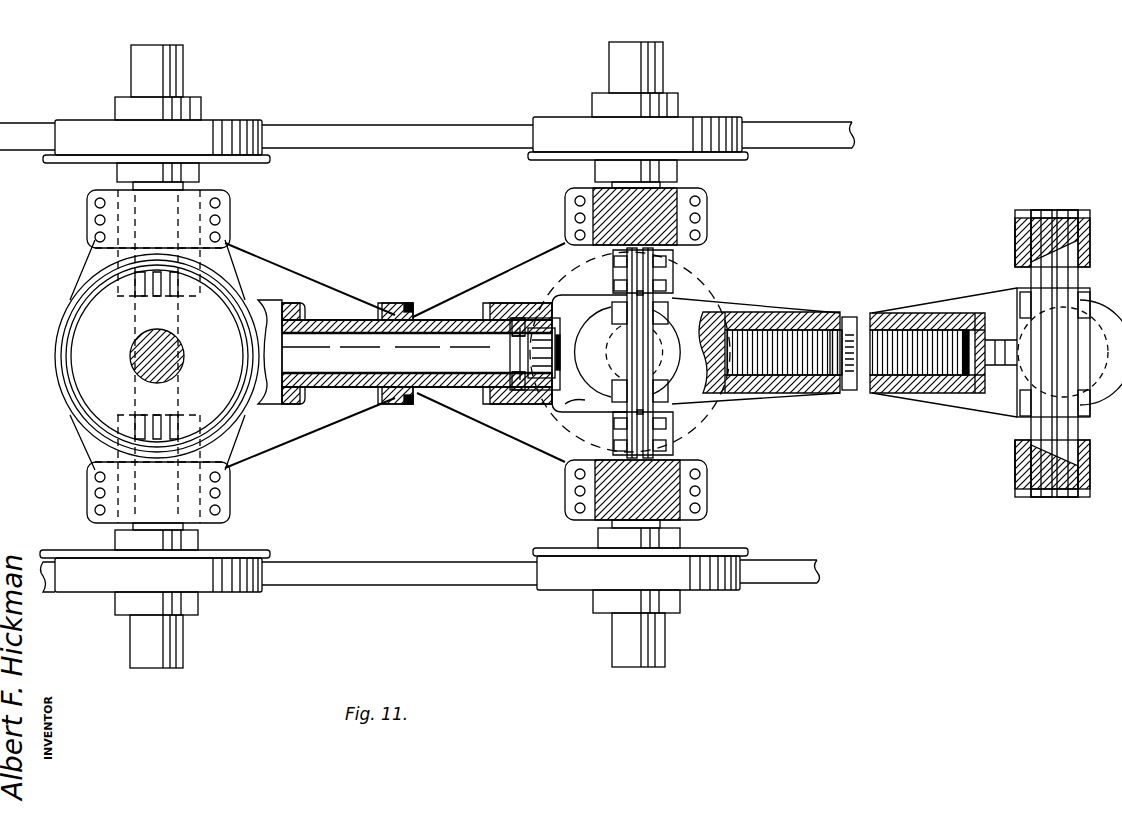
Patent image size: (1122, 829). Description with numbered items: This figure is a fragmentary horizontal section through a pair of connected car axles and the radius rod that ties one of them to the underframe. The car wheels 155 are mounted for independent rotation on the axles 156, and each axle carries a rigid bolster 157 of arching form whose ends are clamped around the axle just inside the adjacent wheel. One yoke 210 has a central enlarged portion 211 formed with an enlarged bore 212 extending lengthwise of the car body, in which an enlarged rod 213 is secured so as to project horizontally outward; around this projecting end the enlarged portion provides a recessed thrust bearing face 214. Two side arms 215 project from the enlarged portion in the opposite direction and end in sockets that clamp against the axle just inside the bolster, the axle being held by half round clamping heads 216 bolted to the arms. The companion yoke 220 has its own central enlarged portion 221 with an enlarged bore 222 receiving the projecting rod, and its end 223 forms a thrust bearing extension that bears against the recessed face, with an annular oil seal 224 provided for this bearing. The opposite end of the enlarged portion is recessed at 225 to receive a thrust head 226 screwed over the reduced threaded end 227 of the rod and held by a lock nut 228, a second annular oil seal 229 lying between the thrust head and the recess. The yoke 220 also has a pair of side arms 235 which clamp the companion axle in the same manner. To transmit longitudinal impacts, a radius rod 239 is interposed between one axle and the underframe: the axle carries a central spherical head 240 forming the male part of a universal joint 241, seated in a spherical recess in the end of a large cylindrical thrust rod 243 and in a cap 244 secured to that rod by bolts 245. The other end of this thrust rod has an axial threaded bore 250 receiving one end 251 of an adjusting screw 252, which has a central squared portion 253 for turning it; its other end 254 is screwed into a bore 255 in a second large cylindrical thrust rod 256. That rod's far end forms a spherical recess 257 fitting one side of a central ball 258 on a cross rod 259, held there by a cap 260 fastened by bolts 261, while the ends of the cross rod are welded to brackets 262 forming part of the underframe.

The car wheels 155 is at (427, 355).
The axles 156 is at (376, 354).
The rigid bolster 157 is at (215, 460).
The yoke 210 is at (328, 246).
The central enlarged portion 211 is at (352, 398).
The enlarged bore 212 is at (343, 330).
The enlarged rod 213 is at (306, 349).
The recessed thrust bearing face 214 is at (419, 349).
The side arms 215 is at (195, 355).
The half round clamping heads 216 is at (157, 356).
The yoke 220 is at (527, 249).
The central enlarged portion 221 is at (482, 320).
The enlarged bore 222 is at (470, 349).
The end 223 is at (403, 404).
The annular oil seal 224 is at (413, 306).
The recess 225 is at (538, 400).
The thrust head 226 is at (518, 398).
The reduced threaded end 227 is at (576, 399).
The lock nut 228 is at (602, 330).
The annular oil seal 229 is at (528, 402).
The side arms 235 is at (550, 260).
The radius rod 239 is at (870, 284).
The central spherical head 240 is at (697, 322).
The universal joint 241 is at (678, 302).
The large cylindrical thrust rod 243 is at (720, 405).
The cap 244 is at (608, 302).
The bolts 245 is at (698, 402).
The axial threaded bore 250 is at (798, 312).
The end of adjusting screw 251 is at (772, 394).
The adjusting screw 252 is at (840, 400).
The central squared portion 253 is at (848, 396).
The other end of adjusting screw 254 is at (884, 394).
The bore 255 is at (904, 318).
The large cylindrical thrust rod 256 is at (938, 313).
The spherical recess 257 is at (1000, 400).
The central ball 258 is at (1010, 420).
The cross rod 259 is at (1040, 210).
The cap 260 is at (1097, 300).
The bolts 261 is at (1097, 413).
The brackets 262 is at (1015, 230).